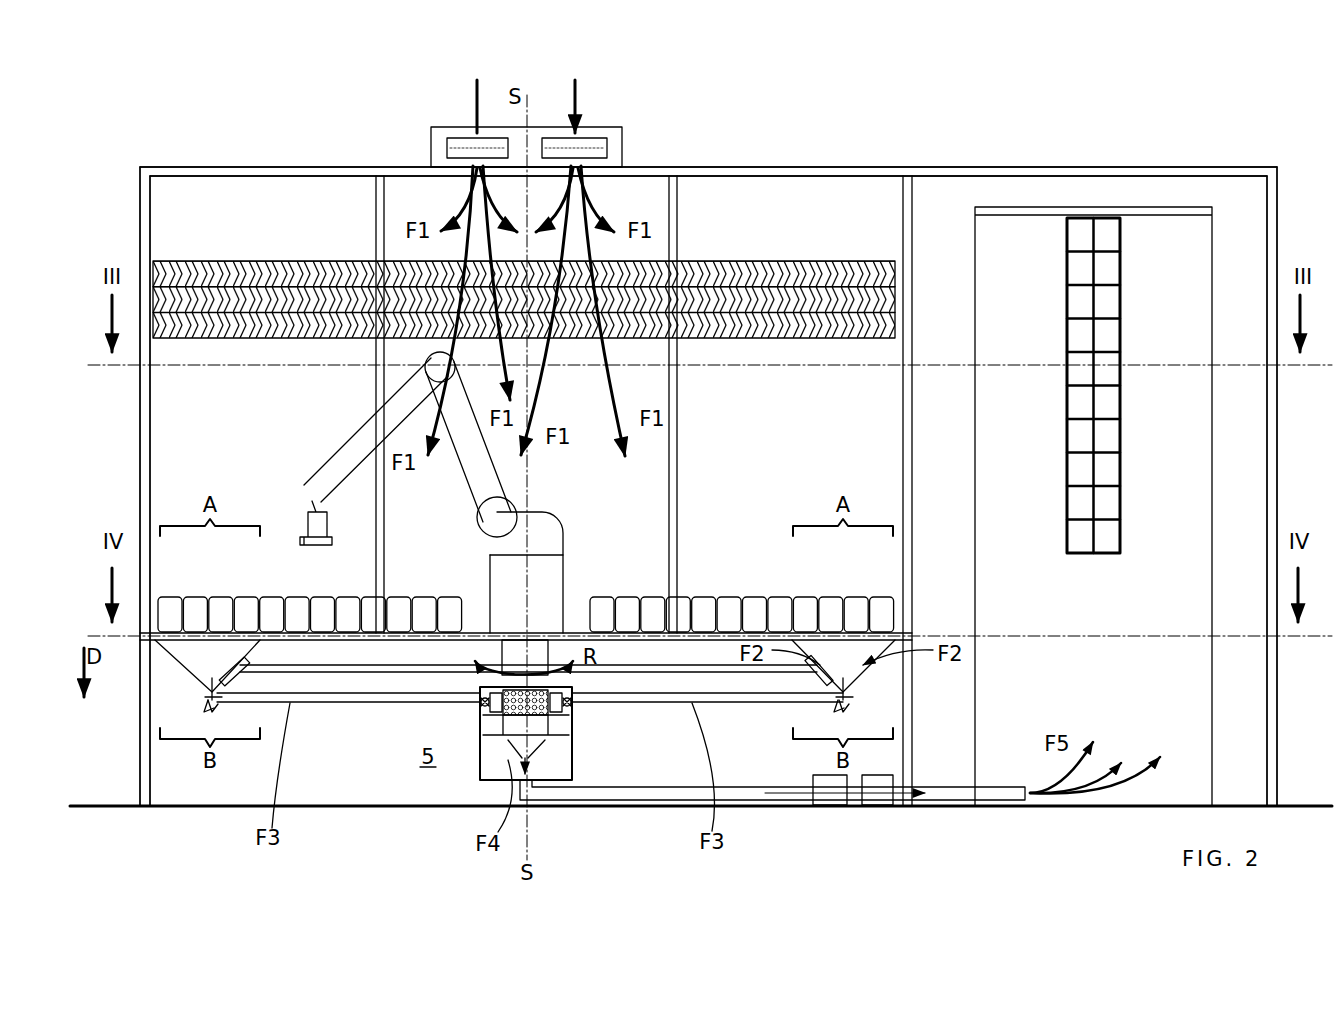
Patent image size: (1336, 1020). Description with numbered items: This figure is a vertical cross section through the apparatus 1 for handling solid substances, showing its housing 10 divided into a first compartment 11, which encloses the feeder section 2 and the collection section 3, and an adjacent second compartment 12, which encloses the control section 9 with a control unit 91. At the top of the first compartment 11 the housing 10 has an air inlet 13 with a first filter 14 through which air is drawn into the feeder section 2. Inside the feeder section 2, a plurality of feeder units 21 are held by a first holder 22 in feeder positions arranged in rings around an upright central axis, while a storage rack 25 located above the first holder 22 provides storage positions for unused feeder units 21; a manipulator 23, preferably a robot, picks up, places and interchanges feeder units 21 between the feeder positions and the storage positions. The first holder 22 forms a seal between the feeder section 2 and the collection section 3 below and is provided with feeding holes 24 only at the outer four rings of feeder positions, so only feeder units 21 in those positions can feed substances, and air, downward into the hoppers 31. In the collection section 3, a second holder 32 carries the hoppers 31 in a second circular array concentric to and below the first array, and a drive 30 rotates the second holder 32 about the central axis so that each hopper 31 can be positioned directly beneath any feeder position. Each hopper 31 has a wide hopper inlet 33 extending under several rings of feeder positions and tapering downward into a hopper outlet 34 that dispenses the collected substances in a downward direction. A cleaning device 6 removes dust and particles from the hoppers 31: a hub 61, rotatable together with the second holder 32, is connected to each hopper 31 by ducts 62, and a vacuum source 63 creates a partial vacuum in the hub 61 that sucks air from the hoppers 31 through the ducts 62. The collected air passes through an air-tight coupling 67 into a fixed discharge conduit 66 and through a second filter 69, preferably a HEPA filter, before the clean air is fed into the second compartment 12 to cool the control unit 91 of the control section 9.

The apparatus 1 is at (198, 153).
The housing 10 is at (297, 167).
The first compartment 11 is at (140, 215).
The second compartment 12 is at (1277, 218).
The air inlet 13 is at (453, 146).
The first filter 14 is at (603, 146).
The feeder section 2 is at (404, 515).
The feeder units 21 is at (245, 605).
The first holder 22 is at (482, 630).
The manipulator 23 is at (562, 540).
The feeding holes 24 is at (247, 658).
The storage rack 25 is at (205, 272).
The drive 30 is at (516, 640).
The hoppers 31 is at (204, 690).
The second holder 32 is at (365, 673).
The hopper inlet 33 is at (182, 656).
The hopper outlet 34 is at (212, 708).
The collection section 3 is at (432, 695).
The cleaning device 6 is at (531, 771).
The hub 61 is at (572, 723).
The ducts 62 is at (310, 704).
The vacuum source 63 is at (883, 805).
The discharge conduit 66 is at (636, 800).
The coupling 67 is at (572, 766).
The second filter 69 is at (835, 805).
The control section 9 is at (1237, 503).
The control unit 91 is at (1078, 505).